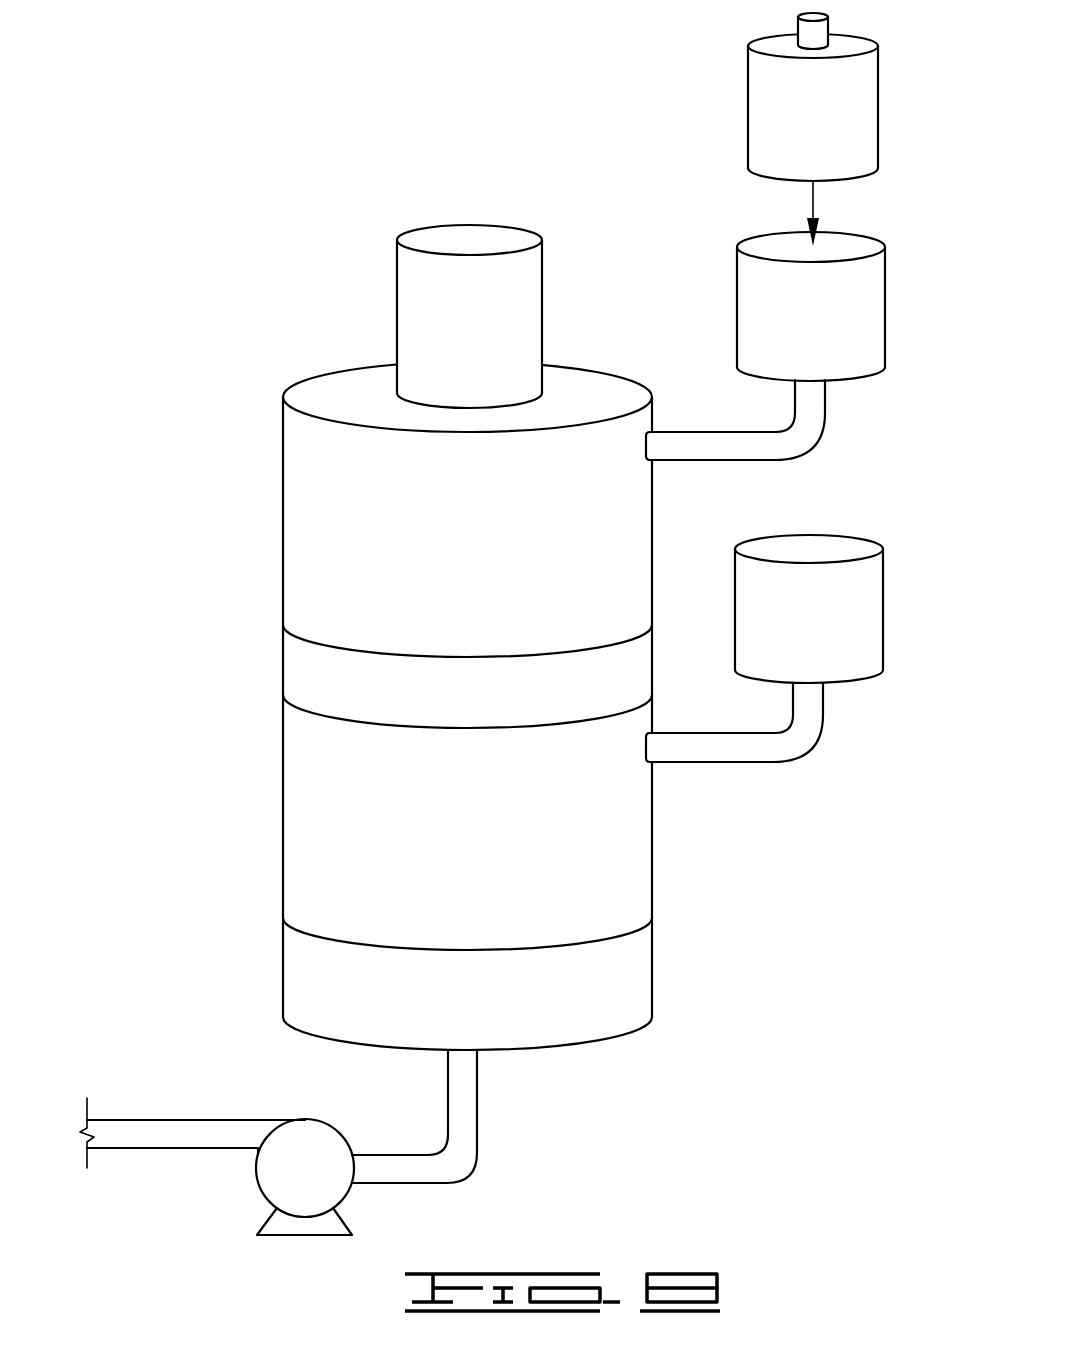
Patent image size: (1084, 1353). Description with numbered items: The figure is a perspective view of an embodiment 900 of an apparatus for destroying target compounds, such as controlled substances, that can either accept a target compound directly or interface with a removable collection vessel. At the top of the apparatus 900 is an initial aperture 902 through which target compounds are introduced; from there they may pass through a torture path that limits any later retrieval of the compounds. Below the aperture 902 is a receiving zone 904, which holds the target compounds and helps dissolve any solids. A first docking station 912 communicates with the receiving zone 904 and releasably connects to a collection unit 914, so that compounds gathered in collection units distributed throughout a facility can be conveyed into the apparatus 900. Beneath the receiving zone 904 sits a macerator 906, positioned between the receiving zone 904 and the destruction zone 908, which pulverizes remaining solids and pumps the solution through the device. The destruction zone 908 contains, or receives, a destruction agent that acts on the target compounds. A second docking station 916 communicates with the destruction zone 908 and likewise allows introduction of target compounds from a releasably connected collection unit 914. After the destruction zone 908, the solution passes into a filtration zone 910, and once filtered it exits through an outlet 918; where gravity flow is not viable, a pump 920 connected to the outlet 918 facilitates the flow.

The embodiment 900 is at (222, 336).
The initial aperture 902 is at (490, 342).
The receiving zone 904 is at (490, 551).
The macerator 906 is at (489, 705).
The destruction zone 908 is at (487, 851).
The filtration zone 910 is at (487, 1008).
The first docking station 912 is at (833, 333).
The collection unit 914 is at (835, 128).
The second docking station 916 is at (831, 635).
The outlet 918 is at (477, 1117).
The pump 920 is at (263, 1196).